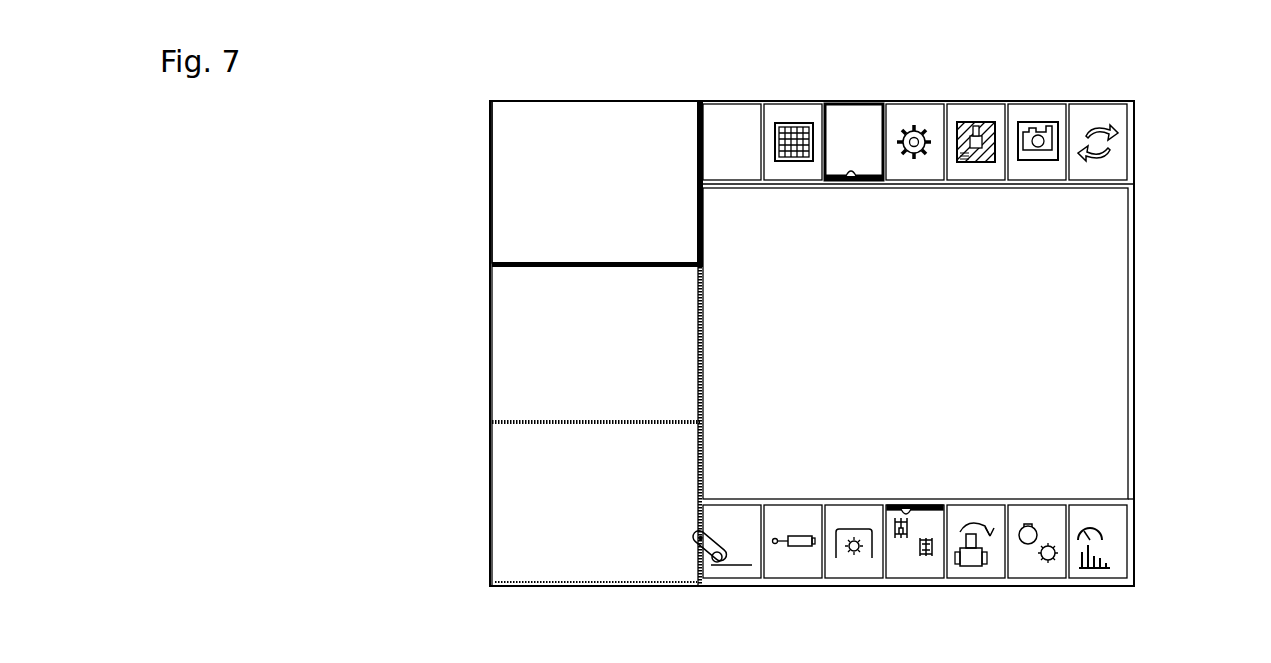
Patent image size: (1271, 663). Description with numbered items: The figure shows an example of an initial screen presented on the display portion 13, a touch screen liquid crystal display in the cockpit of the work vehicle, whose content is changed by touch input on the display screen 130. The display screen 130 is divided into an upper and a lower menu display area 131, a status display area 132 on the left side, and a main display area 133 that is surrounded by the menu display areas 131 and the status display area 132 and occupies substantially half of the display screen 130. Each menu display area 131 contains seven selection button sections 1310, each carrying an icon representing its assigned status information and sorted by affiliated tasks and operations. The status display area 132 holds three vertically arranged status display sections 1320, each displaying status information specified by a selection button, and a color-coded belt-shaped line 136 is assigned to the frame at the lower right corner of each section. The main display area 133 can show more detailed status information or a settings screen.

The display portion 13 is at (1163, 83).
The display screen 130 is at (1137, 149).
The menu display area 131 is at (1130, 96).
The status display area 132 is at (482, 101).
The status display section 1320 is at (585, 128).
The main display area 133 is at (1140, 187).
The belt-shaped line 136 is at (842, 182).
The selection button section 1310 is at (911, 173).